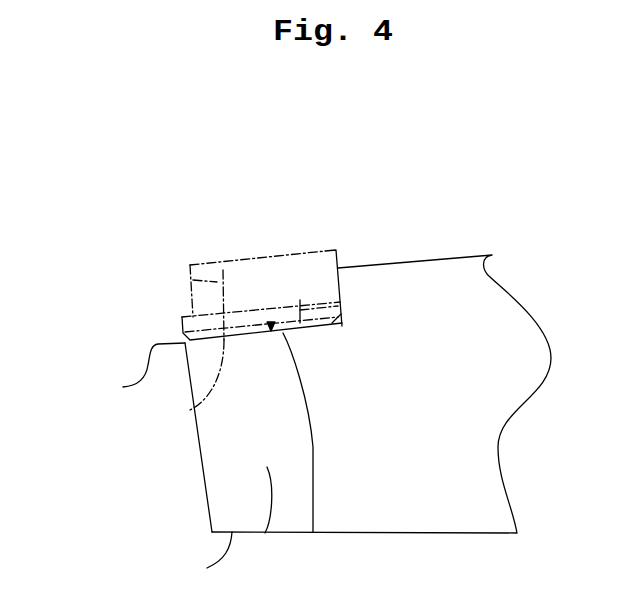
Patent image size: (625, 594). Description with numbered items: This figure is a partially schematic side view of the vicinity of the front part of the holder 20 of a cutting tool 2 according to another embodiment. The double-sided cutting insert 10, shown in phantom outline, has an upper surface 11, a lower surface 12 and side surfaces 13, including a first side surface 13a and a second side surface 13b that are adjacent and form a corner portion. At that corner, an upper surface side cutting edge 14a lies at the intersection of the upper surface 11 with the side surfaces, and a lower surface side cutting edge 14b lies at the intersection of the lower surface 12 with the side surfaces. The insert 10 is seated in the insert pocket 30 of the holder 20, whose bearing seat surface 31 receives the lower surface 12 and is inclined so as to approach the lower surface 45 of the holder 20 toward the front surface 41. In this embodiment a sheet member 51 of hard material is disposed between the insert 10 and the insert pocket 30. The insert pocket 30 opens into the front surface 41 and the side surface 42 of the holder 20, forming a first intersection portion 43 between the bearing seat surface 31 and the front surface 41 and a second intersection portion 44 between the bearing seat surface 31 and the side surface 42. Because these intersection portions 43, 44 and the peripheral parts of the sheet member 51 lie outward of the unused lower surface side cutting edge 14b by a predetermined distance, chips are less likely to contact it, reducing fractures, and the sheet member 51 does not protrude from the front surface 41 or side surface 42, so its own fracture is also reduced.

The cutting tool 2 is at (452, 115).
The double-sided cutting insert 10 is at (310, 260).
The sheet member 51 is at (325, 277).
The holder 20 is at (385, 280).
The insert pocket 30 is at (271, 323).
The bearing seat surface 31 is at (300, 300).
The upper surface 11 is at (223, 270).
The lower surface 12 is at (190, 410).
The side surface 13 is at (77, 262).
The first side surface 13a is at (195, 298).
The second side surface 13b is at (217, 282).
The upper surface side cutting edge 14a is at (190, 265).
The lower surface side cutting edge 14b is at (187, 310).
The front surface 41 is at (202, 467).
The side surface 42 is at (265, 533).
The first intersection portion 43 is at (123, 387).
The second intersection portion 44 is at (313, 532).
The lower surface 45 is at (207, 568).